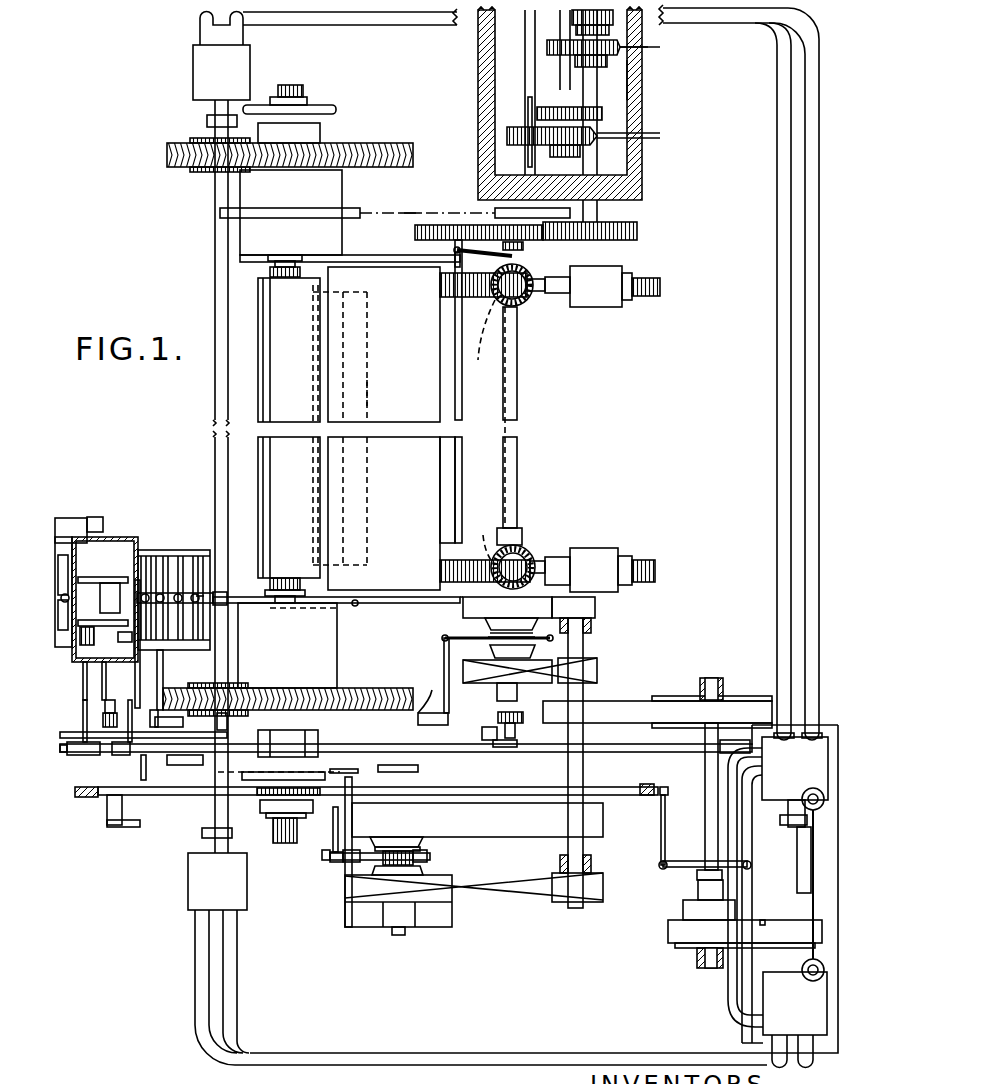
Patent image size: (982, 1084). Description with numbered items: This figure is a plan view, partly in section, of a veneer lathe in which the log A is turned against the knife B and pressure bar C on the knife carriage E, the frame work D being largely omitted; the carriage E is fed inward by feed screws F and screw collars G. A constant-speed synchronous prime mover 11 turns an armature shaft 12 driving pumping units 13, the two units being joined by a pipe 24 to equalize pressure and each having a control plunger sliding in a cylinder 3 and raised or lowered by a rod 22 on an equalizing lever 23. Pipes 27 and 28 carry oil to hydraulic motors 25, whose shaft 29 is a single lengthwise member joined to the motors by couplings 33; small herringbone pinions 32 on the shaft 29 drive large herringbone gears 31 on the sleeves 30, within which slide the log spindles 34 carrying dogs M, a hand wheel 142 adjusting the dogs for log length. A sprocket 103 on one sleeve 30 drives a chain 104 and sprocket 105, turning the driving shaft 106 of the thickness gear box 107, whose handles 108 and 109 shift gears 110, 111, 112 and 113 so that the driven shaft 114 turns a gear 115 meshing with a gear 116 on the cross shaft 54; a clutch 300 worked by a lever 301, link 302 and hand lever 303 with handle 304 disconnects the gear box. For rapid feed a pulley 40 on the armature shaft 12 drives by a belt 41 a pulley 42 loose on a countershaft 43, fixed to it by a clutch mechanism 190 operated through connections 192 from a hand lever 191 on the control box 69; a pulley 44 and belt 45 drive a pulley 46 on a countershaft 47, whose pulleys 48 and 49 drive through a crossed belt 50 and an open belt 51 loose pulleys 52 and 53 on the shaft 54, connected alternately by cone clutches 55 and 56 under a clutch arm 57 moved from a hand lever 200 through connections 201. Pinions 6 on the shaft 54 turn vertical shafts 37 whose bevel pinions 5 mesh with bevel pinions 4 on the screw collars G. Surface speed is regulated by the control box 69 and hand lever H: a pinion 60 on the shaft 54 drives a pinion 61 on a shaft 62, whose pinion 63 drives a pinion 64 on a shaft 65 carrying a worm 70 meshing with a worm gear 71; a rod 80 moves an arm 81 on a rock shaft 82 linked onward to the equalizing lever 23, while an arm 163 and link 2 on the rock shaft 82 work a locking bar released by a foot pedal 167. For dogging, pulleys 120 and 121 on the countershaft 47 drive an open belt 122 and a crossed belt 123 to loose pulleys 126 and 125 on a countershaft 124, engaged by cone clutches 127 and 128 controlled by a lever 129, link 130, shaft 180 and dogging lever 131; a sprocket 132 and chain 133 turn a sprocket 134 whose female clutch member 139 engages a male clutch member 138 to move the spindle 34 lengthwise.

The link 2 is at (83, 688).
The cylinder 3 is at (818, 803).
The bevel pinion 4 is at (535, 300).
The bevel pinion 5 is at (505, 306).
The pinion 6 is at (520, 275).
The prime mover 11 is at (698, 890).
The armature shaft 12 is at (793, 915).
The pumping unit 13 is at (770, 745).
The rod 22 is at (813, 788).
The equalizing lever 23 is at (752, 910).
The pipe 24 is at (728, 1015).
The hydraulic motor 25 is at (193, 68).
The pipe 27 is at (777, 282).
The pipe 28 is at (805, 322).
The shaft 29 is at (215, 107).
The sleeve 30 is at (270, 262).
The large herringbone gear 31 is at (167, 153).
The small herringbone pinion 32 is at (195, 172).
The coupling 33 is at (207, 124).
The log spindle 34 is at (290, 85).
The vertical shaft 37 is at (500, 312).
The pulley 40 is at (760, 955).
The belt 41 is at (668, 935).
The pulley 42 is at (697, 955).
The countershaft 43 is at (665, 818).
The pulley 44 is at (700, 695).
The belt 45 is at (640, 705).
The pulley 46 is at (655, 730).
The countershaft 47 is at (590, 752).
The pulley 48 is at (590, 655).
The pulley 49 is at (590, 628).
The crossed belt 50 is at (597, 675).
The open belt 51 is at (595, 600).
The pulley 52 is at (487, 683).
The pulley 53 is at (463, 610).
The cross shaft 54 is at (517, 383).
The cone clutch 55 is at (490, 630).
The cone clutch 56 is at (507, 608).
The clutch arm 57 is at (444, 641).
The pinion 60 is at (520, 722).
The pinion 61 is at (512, 742).
The shaft 62 is at (498, 747).
The pinion 63 is at (92, 755).
The pinion 64 is at (100, 735).
The shaft 65 is at (103, 718).
The control box 69 is at (108, 540).
The worm 70 is at (108, 590).
The worm gear 71 is at (105, 577).
The rod 80 is at (140, 680).
The arm 81 is at (121, 755).
The rock shaft 82 is at (185, 792).
The sprocket 103 is at (232, 218).
The chain 104 is at (415, 213).
The sprocket 105 is at (505, 210).
The driving shaft 106 is at (525, 42).
The thickness gear box 107 is at (475, 73).
The operating handle 108 is at (660, 136).
The operating handle 109 is at (660, 47).
The gear 110 is at (507, 136).
The gear 111 is at (537, 112).
The gear 112 is at (547, 47).
The gear 113 is at (618, 60).
The driven shaft 114 is at (590, 158).
The gear 115 is at (637, 230).
The gear 116 is at (415, 232).
The pulley 120 is at (595, 840).
The pulley 121 is at (590, 903).
The open belt 122 is at (518, 830).
The crossed belt 123 is at (527, 905).
The countershaft 124 is at (400, 935).
The loose pulley 125 is at (445, 925).
The loose pulley 126 is at (423, 843).
The cone clutch 127 is at (395, 870).
The cone clutch 128 is at (380, 865).
The lever 129 is at (343, 860).
The link 130 is at (327, 857).
The dogging lever 131 is at (200, 595).
The sprocket 132 is at (418, 768).
The chain 133 is at (373, 775).
The sprocket 134 is at (245, 780).
The male clutch member 138 is at (262, 813).
The female clutch member 139 is at (288, 743).
The hand wheel 142 is at (335, 106).
The arm 163 is at (75, 792).
The foot pedal 167 is at (72, 518).
The shaft 180 is at (352, 771).
The clutch mechanism 190 is at (683, 910).
The hand lever 191 is at (145, 593).
The intermediate connections 192 is at (122, 820).
The hand lever 200 is at (180, 593).
The intermediate connections 201 is at (432, 700).
The clutch 300 is at (505, 243).
The lever 301 is at (455, 252).
The link 302 is at (458, 395).
The hand lever 303 is at (355, 606).
The handle 304 is at (213, 595).
The log A is at (258, 405).
The knife B is at (342, 338).
The pressure bar C is at (368, 403).
The frame work D is at (380, 262).
The knife carriage E is at (445, 500).
The feed screw F is at (462, 320).
The screw collar G is at (572, 300).
The hand lever H is at (95, 517).
The dog M is at (268, 272).